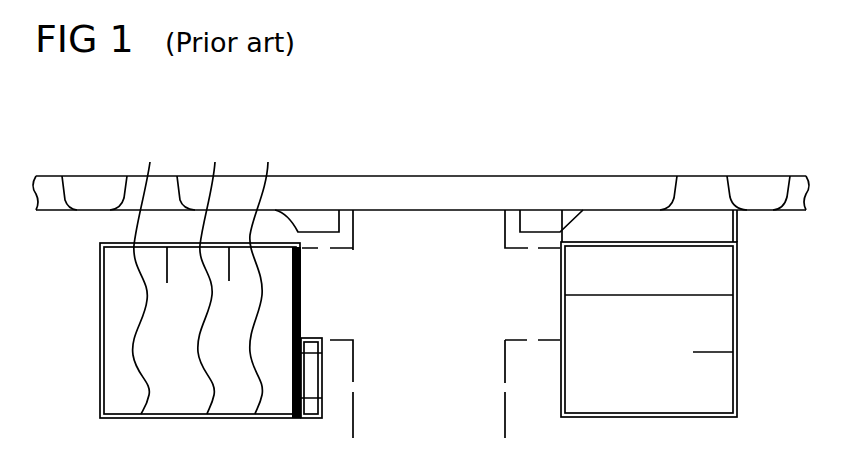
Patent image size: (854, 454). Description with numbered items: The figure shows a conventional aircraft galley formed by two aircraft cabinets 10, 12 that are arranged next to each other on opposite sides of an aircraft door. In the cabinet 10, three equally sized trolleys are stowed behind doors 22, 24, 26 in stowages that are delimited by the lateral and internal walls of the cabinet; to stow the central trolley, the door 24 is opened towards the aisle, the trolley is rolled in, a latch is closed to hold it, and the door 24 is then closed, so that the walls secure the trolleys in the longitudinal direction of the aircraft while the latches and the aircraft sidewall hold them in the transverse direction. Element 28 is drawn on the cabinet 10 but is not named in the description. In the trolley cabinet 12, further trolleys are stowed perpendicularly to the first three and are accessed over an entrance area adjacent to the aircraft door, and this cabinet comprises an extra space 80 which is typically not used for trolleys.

The aircraft cabinet 10 is at (99, 314).
The aircraft cabinet 12 is at (737, 302).
The door 22 is at (151, 276).
The door 24 is at (215, 276).
The door 26 is at (267, 276).
The housing wall 28 is at (97, 352).
The extra space 80 is at (726, 268).